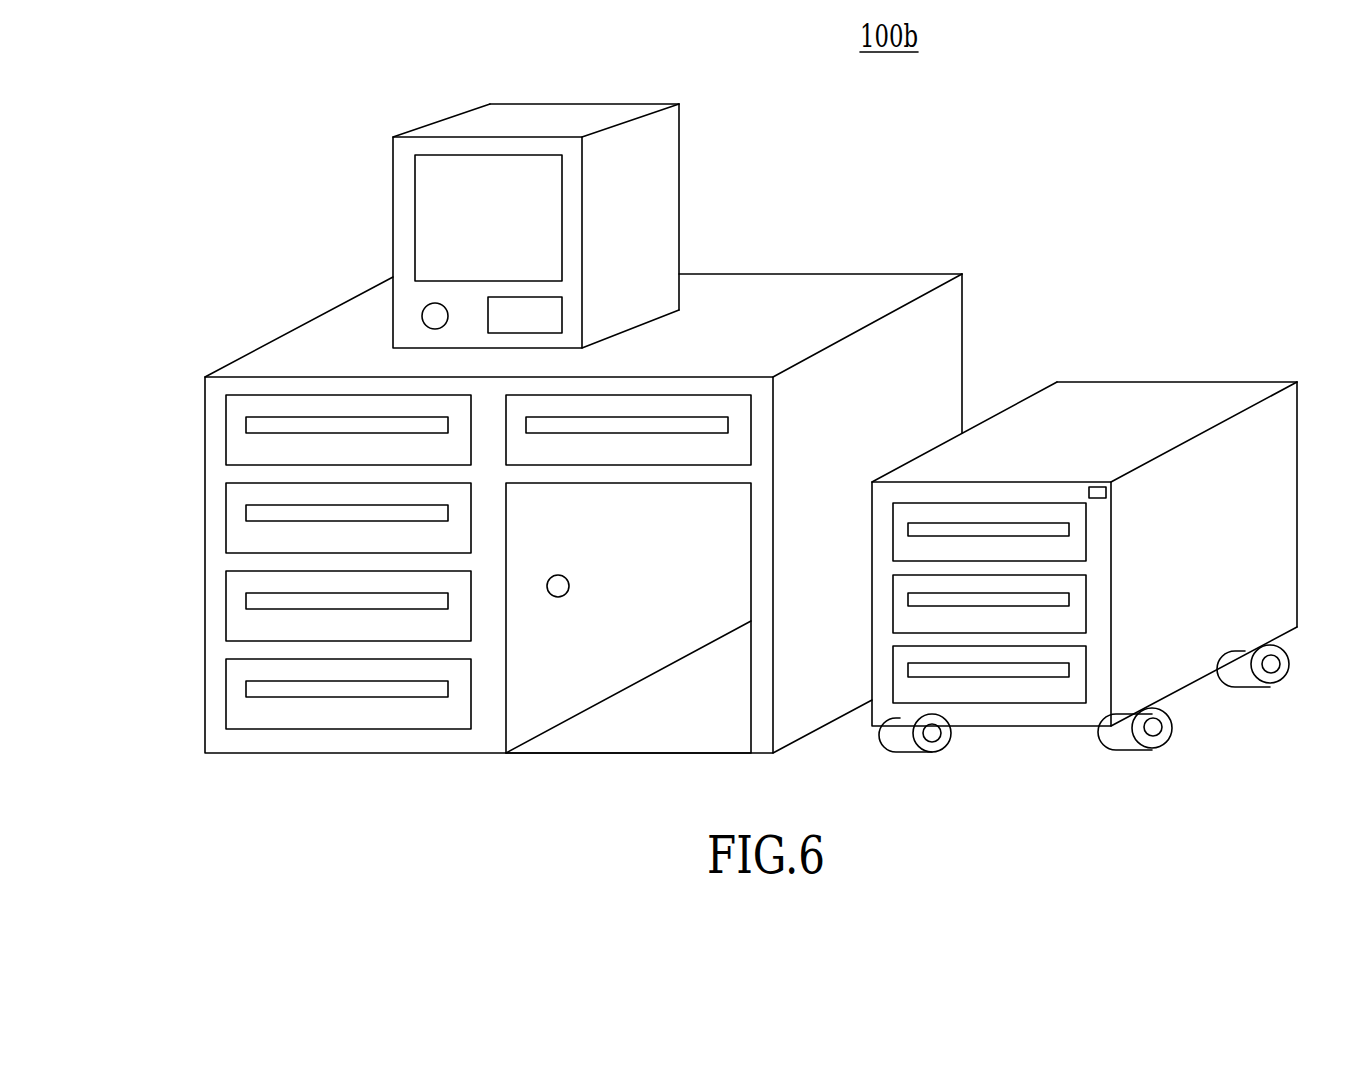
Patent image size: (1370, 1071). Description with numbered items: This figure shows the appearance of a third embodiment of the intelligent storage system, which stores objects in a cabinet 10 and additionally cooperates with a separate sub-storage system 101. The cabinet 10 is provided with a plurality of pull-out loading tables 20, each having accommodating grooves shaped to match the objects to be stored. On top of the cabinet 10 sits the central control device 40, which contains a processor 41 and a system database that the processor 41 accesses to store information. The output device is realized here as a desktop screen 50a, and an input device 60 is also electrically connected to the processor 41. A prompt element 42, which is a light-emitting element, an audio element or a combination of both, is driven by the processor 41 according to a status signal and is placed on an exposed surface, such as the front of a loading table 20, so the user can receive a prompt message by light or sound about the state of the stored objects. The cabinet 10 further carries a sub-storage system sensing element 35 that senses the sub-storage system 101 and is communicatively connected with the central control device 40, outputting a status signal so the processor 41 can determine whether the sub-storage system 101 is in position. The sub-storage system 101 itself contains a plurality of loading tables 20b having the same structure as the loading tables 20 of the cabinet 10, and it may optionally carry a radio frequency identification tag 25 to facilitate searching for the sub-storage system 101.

The cabinet 10 is at (898, 287).
The loading table 20 is at (677, 395).
The prompt element 42 is at (708, 426).
The sub-storage system sensing element 35 is at (562, 592).
The central control device 40 is at (611, 226).
The processor 41 is at (665, 173).
The desktop screen 50a is at (429, 200).
The input device 60 is at (543, 312).
The sub-storage system 101 is at (1197, 380).
The radio frequency identification tag 25 is at (1110, 492).
The loading table 20b is at (1077, 549).